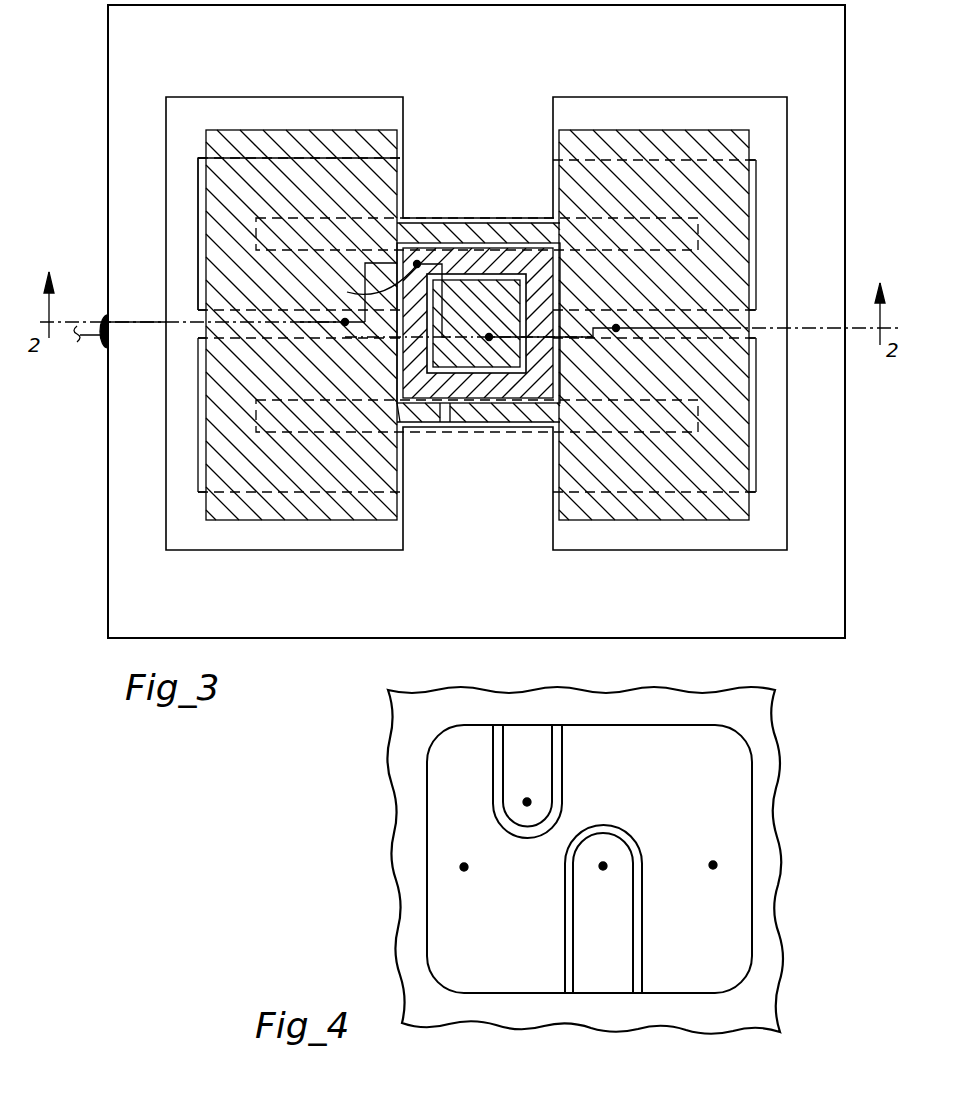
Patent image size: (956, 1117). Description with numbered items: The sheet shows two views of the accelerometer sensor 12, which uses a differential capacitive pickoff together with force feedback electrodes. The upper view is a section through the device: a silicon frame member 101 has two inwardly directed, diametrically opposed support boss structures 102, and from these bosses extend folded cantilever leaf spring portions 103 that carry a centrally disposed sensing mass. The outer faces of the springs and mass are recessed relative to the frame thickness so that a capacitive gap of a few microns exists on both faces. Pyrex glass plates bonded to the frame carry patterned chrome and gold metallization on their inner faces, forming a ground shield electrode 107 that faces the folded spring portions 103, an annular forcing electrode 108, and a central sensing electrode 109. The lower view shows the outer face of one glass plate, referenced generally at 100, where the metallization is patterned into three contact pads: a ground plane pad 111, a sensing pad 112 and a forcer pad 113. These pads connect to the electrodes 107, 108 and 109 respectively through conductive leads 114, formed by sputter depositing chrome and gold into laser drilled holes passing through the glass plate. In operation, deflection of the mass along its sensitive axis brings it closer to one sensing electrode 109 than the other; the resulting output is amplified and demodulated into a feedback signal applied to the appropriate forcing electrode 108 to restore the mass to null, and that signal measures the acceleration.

In FIG. 3, the accelerometer sensor 12 is at (95, 117).
In FIG. 3, the silicon frame member 101 is at (500, 70).
In FIG. 3, the support boss structures 102 is at (498, 201).
In FIG. 3, the folded cantilever leaf spring portions 103 is at (198, 222).
In FIG. 3, the ground shield electrode 107 is at (325, 201).
In FIG. 3, the annular forcing electrode 108 is at (454, 415).
In FIG. 3, the central sensing electrode 109 is at (500, 314).
In FIG. 3, the conductive leads 114 is at (345, 322).
In FIG. 4, the conductive leads 114 is at (464, 867).
In FIG. 4, the detector plate 100 is at (553, 719).
In FIG. 4, the ground plane pad 111 is at (665, 789).
In FIG. 4, the sensing pad 112 is at (545, 773).
In FIG. 4, the forcer pad 113 is at (622, 963).